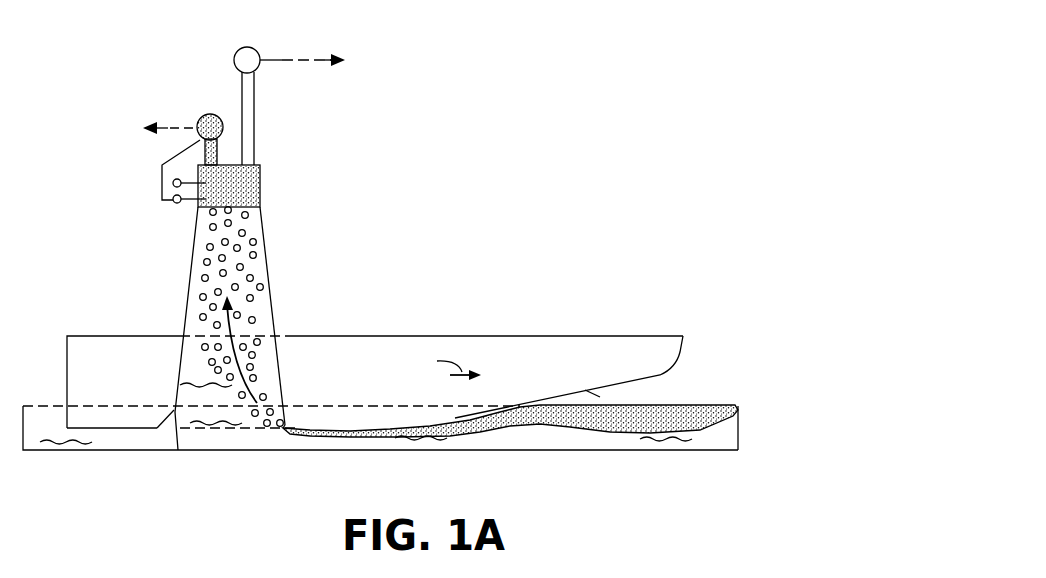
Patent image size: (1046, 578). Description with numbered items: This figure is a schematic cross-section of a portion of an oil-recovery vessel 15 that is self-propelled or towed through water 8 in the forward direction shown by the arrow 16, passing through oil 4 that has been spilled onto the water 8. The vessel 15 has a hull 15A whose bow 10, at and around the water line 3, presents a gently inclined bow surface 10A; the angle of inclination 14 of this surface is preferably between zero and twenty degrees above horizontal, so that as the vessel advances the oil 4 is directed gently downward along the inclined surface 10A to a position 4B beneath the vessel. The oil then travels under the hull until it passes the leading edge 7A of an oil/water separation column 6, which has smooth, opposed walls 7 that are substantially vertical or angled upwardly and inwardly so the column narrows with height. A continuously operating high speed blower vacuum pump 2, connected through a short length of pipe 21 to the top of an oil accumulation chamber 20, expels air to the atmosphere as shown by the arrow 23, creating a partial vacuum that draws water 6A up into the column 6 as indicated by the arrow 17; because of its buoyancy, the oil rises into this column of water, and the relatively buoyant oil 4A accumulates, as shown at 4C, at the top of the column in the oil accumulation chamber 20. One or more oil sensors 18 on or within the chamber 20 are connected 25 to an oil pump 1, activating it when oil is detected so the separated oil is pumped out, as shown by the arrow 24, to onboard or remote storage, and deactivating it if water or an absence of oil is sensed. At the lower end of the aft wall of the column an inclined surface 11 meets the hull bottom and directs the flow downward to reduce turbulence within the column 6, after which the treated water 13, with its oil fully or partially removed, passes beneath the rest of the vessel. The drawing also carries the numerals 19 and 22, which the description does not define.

The oil pump 1 is at (208, 115).
The high speed blower vacuum pump 2 is at (245, 58).
The water line 3 is at (740, 388).
The oil 4 is at (688, 405).
The relatively buoyant oil 4A is at (205, 278).
The position beneath the vessel 4B is at (460, 425).
The accumulated oil 4C is at (264, 177).
The oil/water separation column 6 is at (181, 330).
The water 6A is at (193, 302).
The walls 7 is at (269, 263).
The leading edge 7A is at (285, 420).
The water 8 is at (540, 438).
The bow 10 is at (680, 350).
The inclined bow surface 10A is at (590, 390).
The inclined surface 11 is at (178, 450).
The treated water 13 is at (100, 440).
The angle of inclination 14 is at (645, 397).
The vessel 15 is at (522, 128).
The hull 15A is at (113, 355).
The arrow 16 is at (443, 365).
The arrow 17 is at (233, 325).
The oil sensors 18 is at (174, 203).
The gas bubbles 19 is at (257, 232).
The oil accumulation chamber 20 is at (261, 197).
The pipe 21 is at (247, 108).
The control line 22 is at (287, 57).
The arrow 23 is at (325, 53).
The arrow 24 is at (157, 122).
The connection 25 is at (162, 190).